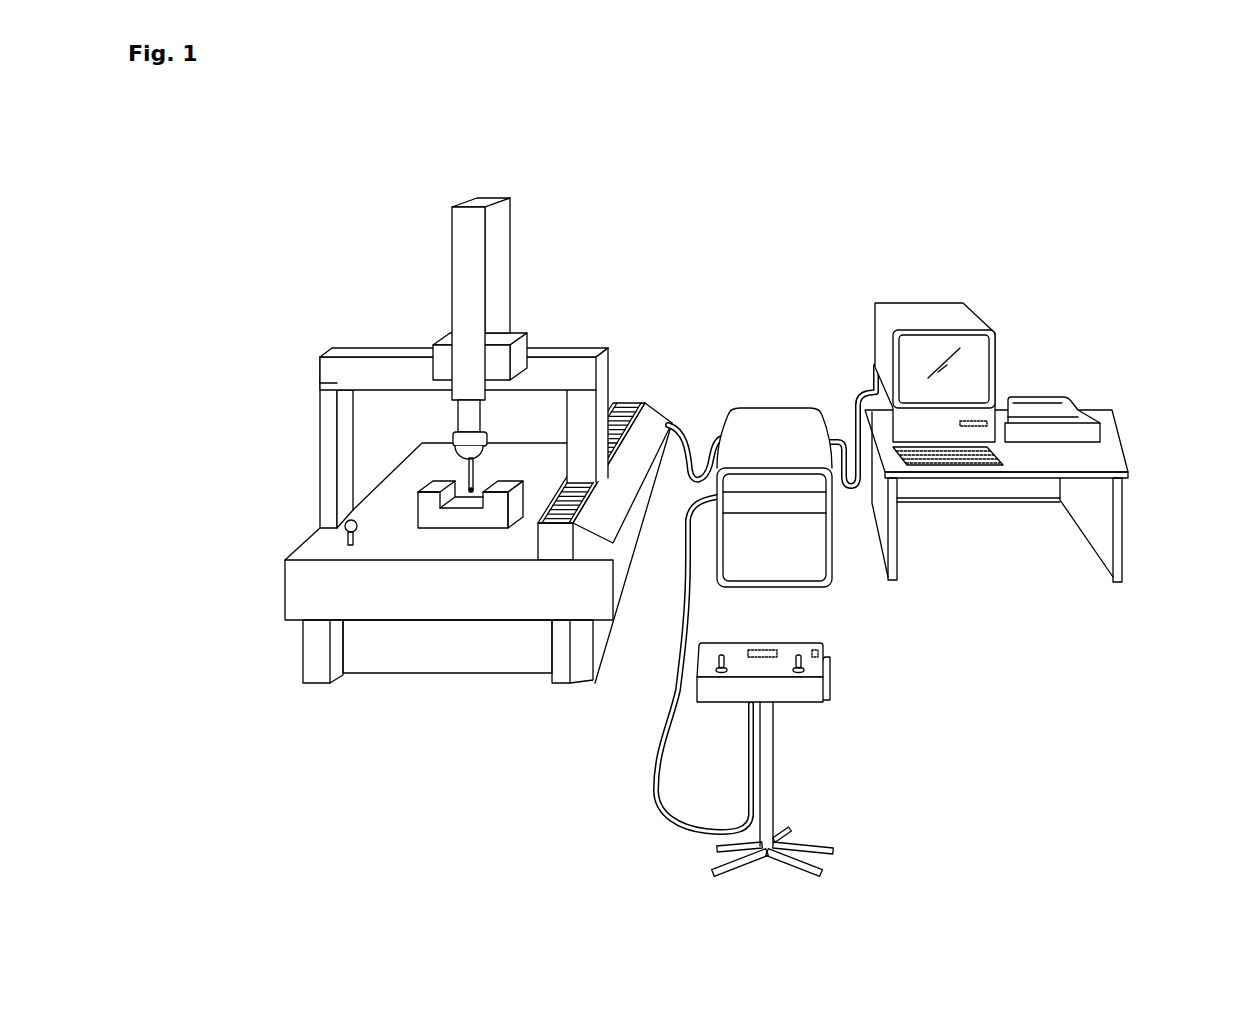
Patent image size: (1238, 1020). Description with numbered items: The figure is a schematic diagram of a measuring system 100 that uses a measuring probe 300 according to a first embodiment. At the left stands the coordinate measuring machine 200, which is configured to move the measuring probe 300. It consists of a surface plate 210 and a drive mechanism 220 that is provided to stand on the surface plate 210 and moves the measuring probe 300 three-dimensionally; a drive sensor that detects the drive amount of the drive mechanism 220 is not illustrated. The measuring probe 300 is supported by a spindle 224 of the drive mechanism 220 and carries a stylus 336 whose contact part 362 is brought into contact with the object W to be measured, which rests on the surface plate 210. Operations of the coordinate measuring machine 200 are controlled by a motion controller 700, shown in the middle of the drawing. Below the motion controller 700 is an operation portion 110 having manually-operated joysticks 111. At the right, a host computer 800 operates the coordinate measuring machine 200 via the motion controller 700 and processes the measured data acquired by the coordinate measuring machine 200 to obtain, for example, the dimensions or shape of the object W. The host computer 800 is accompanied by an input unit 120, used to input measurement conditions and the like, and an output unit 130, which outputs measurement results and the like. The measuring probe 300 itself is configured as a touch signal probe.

The measuring system 100 is at (611, 207).
The operation portion 110 is at (832, 716).
The joysticks 111 is at (793, 645).
The input unit 120 is at (953, 466).
The output unit 130 is at (985, 357).
The coordinate measuring machine 200 is at (285, 302).
The surface plate 210 is at (290, 597).
The drive mechanism 220 is at (388, 313).
The spindle 224 is at (462, 421).
The measuring probe 300 is at (490, 455).
The stylus 336 is at (467, 479).
The contact part 362 is at (478, 491).
The motion controller 700 is at (777, 420).
The host computer 800 is at (1085, 364).
The object to be measured W is at (416, 514).